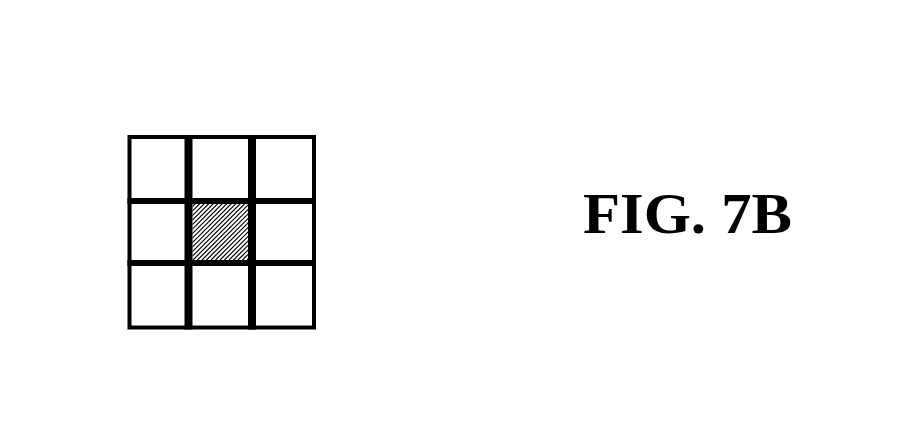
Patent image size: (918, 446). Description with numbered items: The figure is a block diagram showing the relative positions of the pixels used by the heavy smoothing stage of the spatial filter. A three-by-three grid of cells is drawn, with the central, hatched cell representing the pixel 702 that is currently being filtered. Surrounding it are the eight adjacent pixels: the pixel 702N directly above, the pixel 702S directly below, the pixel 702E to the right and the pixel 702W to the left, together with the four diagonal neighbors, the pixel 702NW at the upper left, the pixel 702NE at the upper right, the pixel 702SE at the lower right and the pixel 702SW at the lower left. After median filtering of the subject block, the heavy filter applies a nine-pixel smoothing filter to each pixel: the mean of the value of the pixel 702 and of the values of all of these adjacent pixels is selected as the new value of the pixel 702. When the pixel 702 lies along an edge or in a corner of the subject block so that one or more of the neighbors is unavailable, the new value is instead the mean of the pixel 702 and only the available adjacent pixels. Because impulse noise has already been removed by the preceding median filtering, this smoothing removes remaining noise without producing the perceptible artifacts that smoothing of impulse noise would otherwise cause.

The pixel 702 is at (221, 232).
The north adjacent pixel 702N is at (218, 135).
The northeast adjacent pixel 702NE is at (313, 137).
The east adjacent pixel 702E is at (315, 232).
The southeast adjacent pixel 702SE is at (300, 330).
The south adjacent pixel 702S is at (220, 329).
The southwest adjacent pixel 702SW is at (157, 328).
The west adjacent pixel 702W is at (128, 230).
The northwest adjacent pixel 702NW is at (142, 137).